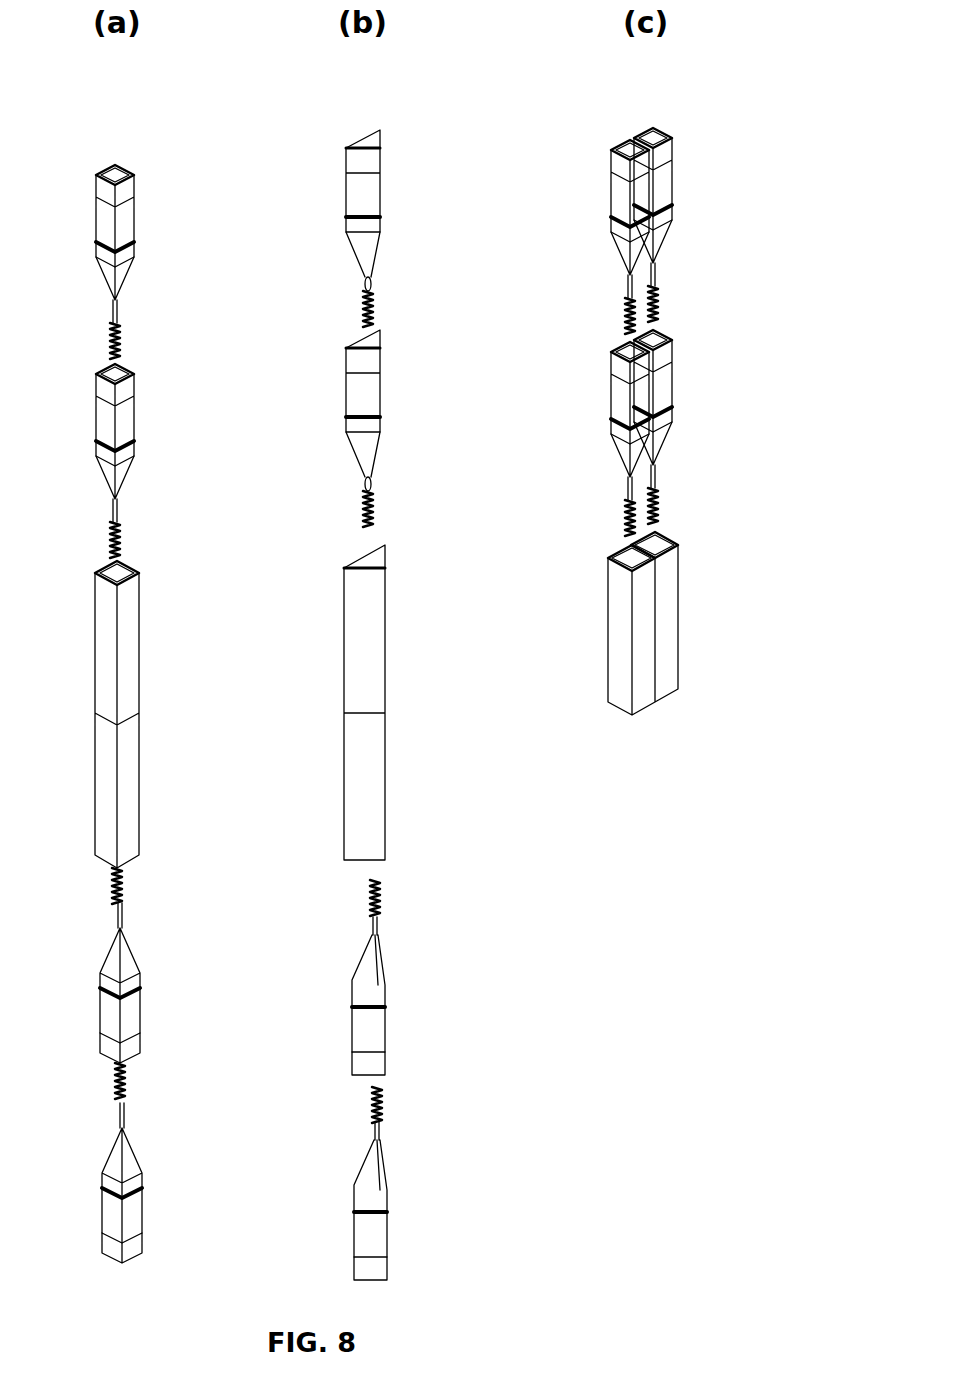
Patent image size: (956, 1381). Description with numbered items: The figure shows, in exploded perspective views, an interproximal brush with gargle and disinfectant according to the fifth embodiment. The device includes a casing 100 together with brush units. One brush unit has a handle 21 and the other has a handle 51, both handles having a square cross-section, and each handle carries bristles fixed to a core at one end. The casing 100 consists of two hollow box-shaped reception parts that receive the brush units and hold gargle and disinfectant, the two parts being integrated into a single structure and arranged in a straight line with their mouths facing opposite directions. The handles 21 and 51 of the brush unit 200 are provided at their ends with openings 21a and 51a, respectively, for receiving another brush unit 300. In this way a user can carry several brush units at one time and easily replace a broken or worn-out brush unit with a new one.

The opening 21a is at (119, 172).
The handle 21 is at (127, 219).
The brush unit 300 is at (344, 241).
The brush unit 200 is at (349, 442).
The casing 100 is at (338, 614).
The handle 51 is at (130, 1017).
The opening 51a is at (127, 1064).